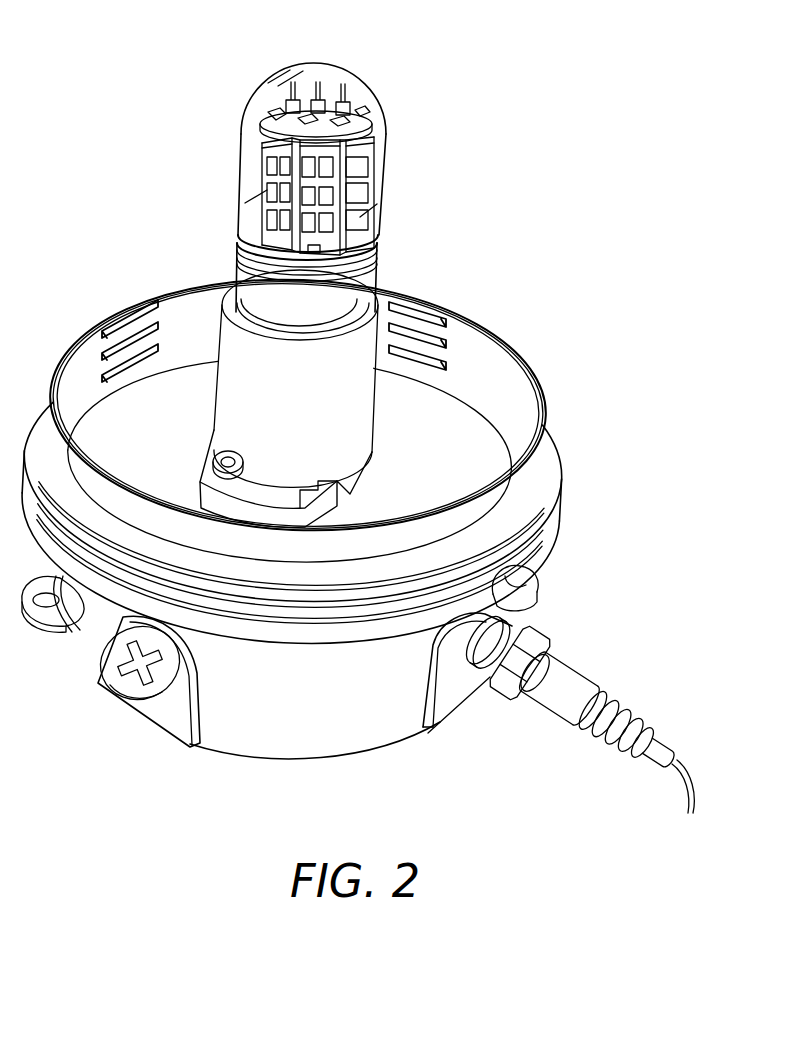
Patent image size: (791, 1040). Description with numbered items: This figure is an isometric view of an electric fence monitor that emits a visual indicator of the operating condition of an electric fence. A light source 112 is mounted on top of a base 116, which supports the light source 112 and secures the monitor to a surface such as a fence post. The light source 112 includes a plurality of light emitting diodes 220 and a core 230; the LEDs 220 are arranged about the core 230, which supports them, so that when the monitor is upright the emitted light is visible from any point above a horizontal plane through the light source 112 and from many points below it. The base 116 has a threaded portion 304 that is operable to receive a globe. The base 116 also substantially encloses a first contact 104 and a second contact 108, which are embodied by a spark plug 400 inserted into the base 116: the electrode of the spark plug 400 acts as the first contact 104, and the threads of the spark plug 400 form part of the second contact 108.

The first contact 104 is at (684, 800).
The second contact 108 is at (510, 668).
The light source 112 is at (241, 176).
The base 116 is at (305, 733).
The light emitting diodes 220 is at (360, 112).
The core 230 is at (318, 148).
The threaded portion 304 is at (433, 340).
The spark plug 400 is at (592, 672).